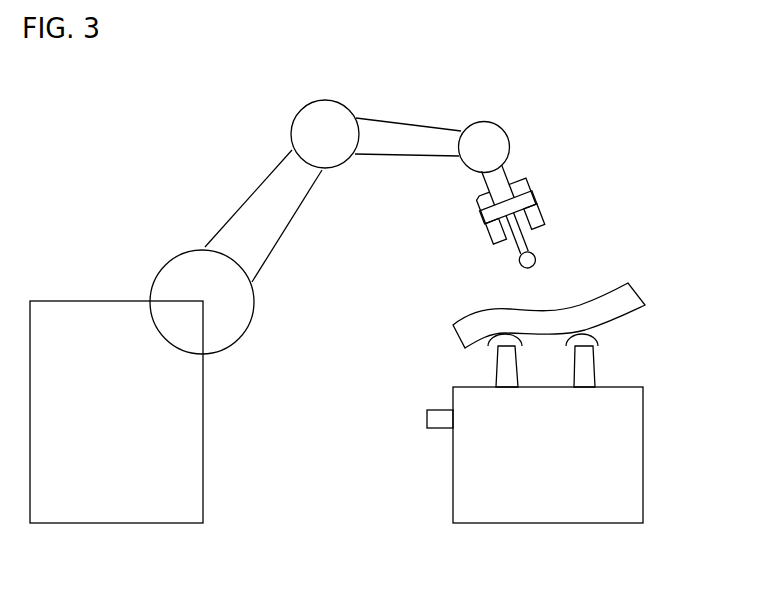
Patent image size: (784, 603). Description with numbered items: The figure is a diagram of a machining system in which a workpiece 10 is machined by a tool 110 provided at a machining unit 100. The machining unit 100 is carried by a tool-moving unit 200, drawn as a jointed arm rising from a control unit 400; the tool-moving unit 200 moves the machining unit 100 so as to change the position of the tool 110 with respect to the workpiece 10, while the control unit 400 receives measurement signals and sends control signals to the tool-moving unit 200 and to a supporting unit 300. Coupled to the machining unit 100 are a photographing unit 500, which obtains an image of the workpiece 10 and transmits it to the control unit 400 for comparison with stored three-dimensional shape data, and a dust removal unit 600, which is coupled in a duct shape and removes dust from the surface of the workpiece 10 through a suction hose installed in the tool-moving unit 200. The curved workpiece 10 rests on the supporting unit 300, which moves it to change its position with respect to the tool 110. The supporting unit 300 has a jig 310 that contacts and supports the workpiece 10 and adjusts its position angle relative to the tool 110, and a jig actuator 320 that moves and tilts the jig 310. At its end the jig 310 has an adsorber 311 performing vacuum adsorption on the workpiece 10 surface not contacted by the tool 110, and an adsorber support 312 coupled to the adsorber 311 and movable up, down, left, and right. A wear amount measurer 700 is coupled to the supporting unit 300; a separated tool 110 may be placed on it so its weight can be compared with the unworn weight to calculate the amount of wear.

The workpiece 10 is at (627, 297).
The machining unit 100 is at (498, 176).
The tool 110 is at (536, 257).
The tool-moving unit 200 is at (398, 132).
The supporting unit 300 is at (578, 448).
The jig 310 is at (600, 357).
The adsorber 311 is at (594, 336).
The adsorber support 312 is at (588, 367).
The jig actuator 320 is at (620, 442).
The control unit 400 is at (182, 423).
The photographing unit 500 is at (542, 212).
The dust removal unit 600 is at (485, 232).
The wear amount measurer 700 is at (440, 410).